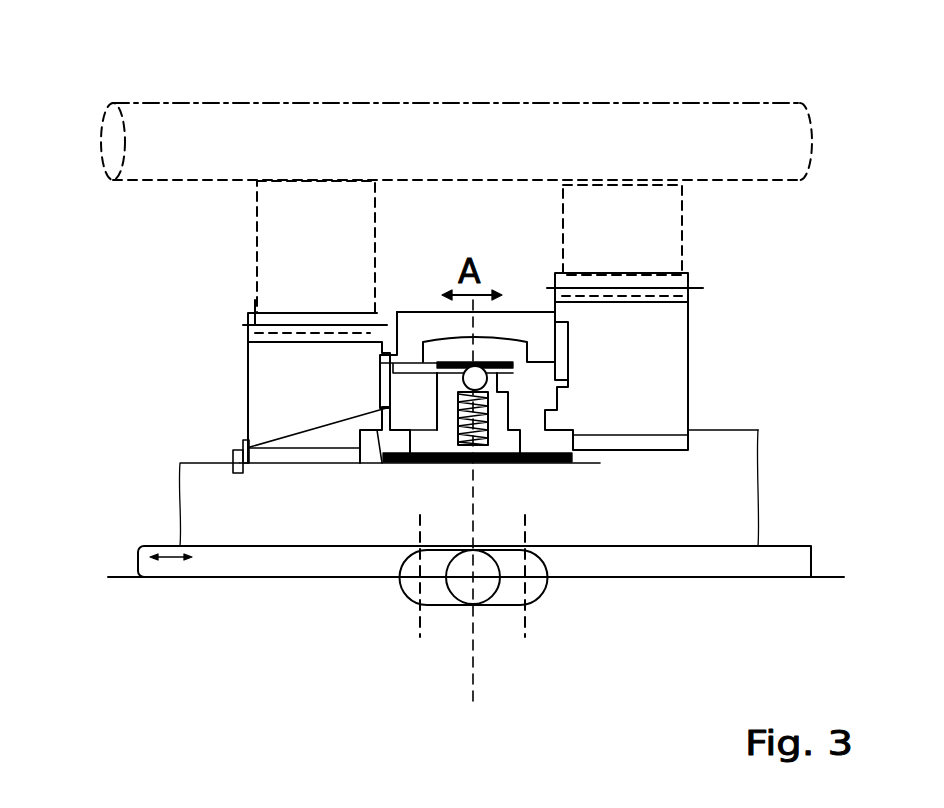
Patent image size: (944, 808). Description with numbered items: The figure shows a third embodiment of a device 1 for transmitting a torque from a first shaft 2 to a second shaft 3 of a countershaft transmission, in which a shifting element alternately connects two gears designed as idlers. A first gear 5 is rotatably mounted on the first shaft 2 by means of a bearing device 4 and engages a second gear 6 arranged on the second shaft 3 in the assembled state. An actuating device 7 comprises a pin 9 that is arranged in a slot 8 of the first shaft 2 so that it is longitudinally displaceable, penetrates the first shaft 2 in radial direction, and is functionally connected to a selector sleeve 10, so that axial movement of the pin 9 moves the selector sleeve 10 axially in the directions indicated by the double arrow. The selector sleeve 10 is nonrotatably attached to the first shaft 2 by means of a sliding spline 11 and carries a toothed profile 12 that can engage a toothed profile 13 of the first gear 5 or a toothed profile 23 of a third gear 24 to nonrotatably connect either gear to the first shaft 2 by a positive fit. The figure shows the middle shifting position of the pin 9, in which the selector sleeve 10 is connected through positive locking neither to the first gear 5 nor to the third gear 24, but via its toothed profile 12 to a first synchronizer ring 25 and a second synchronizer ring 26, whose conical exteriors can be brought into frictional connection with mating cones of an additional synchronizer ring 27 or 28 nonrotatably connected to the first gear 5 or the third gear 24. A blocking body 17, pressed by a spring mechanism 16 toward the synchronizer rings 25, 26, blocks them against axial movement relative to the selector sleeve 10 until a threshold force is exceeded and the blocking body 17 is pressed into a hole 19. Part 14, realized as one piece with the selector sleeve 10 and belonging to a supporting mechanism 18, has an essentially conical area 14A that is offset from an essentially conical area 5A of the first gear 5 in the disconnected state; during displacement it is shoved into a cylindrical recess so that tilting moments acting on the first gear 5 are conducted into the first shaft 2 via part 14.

The device for transmitting a torque 1 is at (120, 268).
The first shaft 2 is at (210, 510).
The second shaft 3 is at (740, 153).
The bearing device 4 is at (286, 478).
The first gear 5 is at (392, 425).
The essentially conical area of the first gear 5A is at (418, 443).
The second gear 6 is at (257, 276).
The actuating device 7 is at (548, 630).
The slot 8 is at (532, 583).
The pin 9 is at (487, 585).
The selector sleeve 10 is at (573, 433).
The sliding spline 11 is at (553, 480).
The toothed profile of the selector sleeve 12 is at (557, 403).
The toothed profile of the first gear 13 is at (425, 348).
The part of the supporting mechanism 14 is at (568, 463).
The essentially conical area of part 14 14A is at (263, 428).
The spring mechanism 16 is at (380, 363).
The blocking body 17 is at (503, 408).
The supporting mechanism 18 is at (233, 453).
The hole 19 is at (395, 405).
The toothed profile of the third gear 23 is at (568, 377).
The third gear 24 is at (629, 357).
The first synchronizer ring 25 is at (458, 354).
The second synchronizer ring 26 is at (517, 337).
The additional synchronizer ring 27 is at (423, 363).
The additional synchronizer ring 28 is at (545, 327).